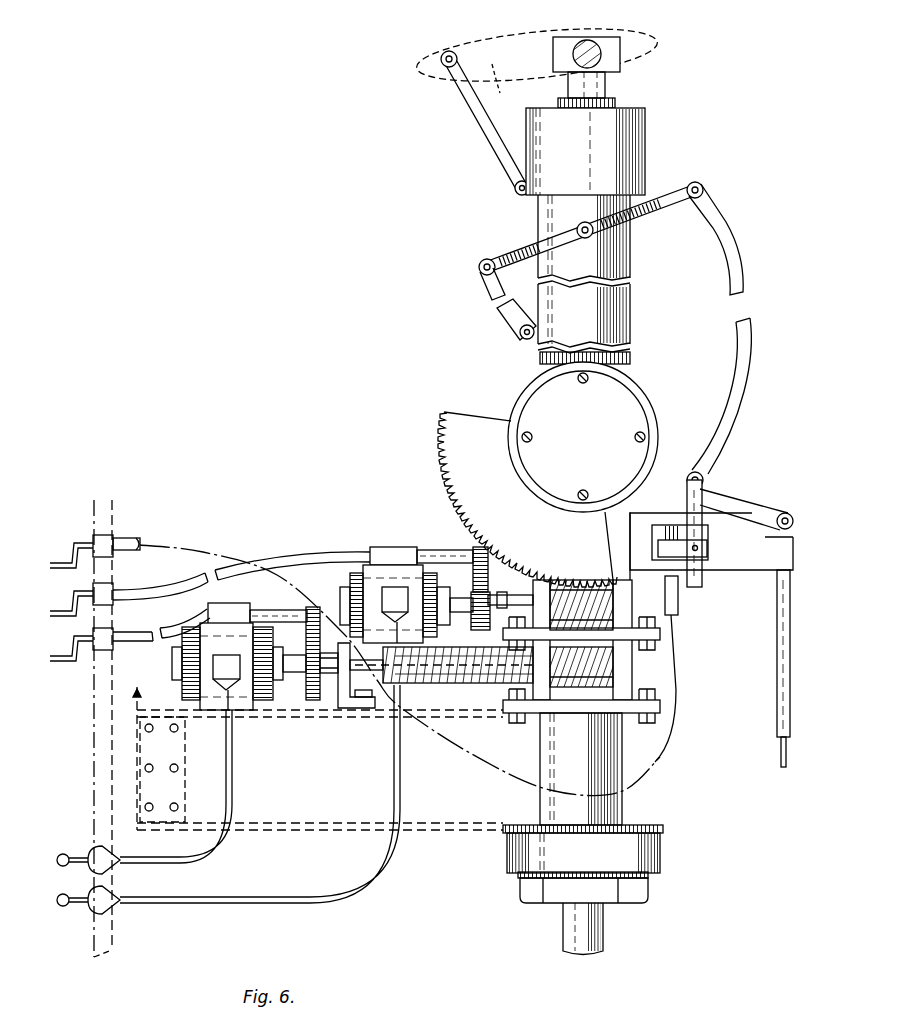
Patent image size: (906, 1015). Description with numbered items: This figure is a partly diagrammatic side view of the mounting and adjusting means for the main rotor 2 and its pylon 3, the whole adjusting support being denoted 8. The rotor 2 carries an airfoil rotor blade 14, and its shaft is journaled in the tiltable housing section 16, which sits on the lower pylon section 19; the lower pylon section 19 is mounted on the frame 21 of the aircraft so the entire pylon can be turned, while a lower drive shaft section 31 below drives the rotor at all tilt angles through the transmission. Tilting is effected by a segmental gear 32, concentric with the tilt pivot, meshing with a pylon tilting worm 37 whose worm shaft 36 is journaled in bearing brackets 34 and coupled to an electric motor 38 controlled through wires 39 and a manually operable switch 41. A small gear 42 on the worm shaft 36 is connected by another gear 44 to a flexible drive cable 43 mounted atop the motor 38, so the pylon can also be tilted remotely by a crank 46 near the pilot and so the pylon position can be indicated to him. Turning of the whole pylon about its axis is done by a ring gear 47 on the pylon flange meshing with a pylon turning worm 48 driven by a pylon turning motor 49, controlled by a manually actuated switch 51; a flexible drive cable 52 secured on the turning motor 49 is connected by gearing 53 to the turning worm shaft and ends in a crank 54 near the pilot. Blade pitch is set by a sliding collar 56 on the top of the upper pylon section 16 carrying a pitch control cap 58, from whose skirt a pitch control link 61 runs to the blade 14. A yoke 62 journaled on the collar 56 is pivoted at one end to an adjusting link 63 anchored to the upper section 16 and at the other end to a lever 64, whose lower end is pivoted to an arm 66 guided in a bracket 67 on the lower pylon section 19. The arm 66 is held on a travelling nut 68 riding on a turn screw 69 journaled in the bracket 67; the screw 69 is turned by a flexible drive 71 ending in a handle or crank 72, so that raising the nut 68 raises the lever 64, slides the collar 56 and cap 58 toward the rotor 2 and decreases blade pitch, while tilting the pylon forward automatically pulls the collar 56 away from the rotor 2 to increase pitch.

The rotor 2 is at (650, 55).
The rotor blade 14 is at (505, 83).
The pitch control link 61 is at (483, 125).
The pitch control cap 58 is at (647, 137).
The sliding collar 56 is at (540, 219).
The yoke 62 is at (668, 203).
The lever 64 is at (747, 319).
The adjusting link 63 is at (503, 315).
The tiltable housing section 16 is at (622, 310).
The pylon 3 is at (660, 357).
The segmental gear 32 is at (447, 470).
The adjusting support 8 is at (432, 500).
The arm 66 is at (702, 493).
The bracket 67 is at (652, 515).
The turn screw 69 is at (708, 542).
The travelling nut 68 is at (690, 555).
The flexible drive 71 is at (133, 541).
The bearing brackets 34 is at (628, 607).
The pylon tilting worm 37 is at (578, 580).
The pylon turning worm 48 is at (624, 668).
The worm shaft 36 is at (517, 595).
The ring gear 47 is at (427, 684).
The gear 44 is at (474, 549).
The small gear 42 is at (470, 614).
The flexible drive cable 43 is at (425, 549).
The electric motor 38 is at (350, 578).
The flexible drive cable 52 is at (258, 604).
The gearing 53 is at (303, 650).
The pylon turning motor 49 is at (182, 658).
The handle or crank 72 is at (78, 544).
The crank 46 is at (72, 592).
The crank 54 is at (70, 660).
The frame 21 is at (423, 818).
The lower pylon section 19 is at (605, 795).
The lower drive shaft section 31 is at (597, 932).
The manually actuated switch 51 is at (92, 853).
The manually operable switch 41 is at (92, 910).
The wires 39 is at (258, 903).